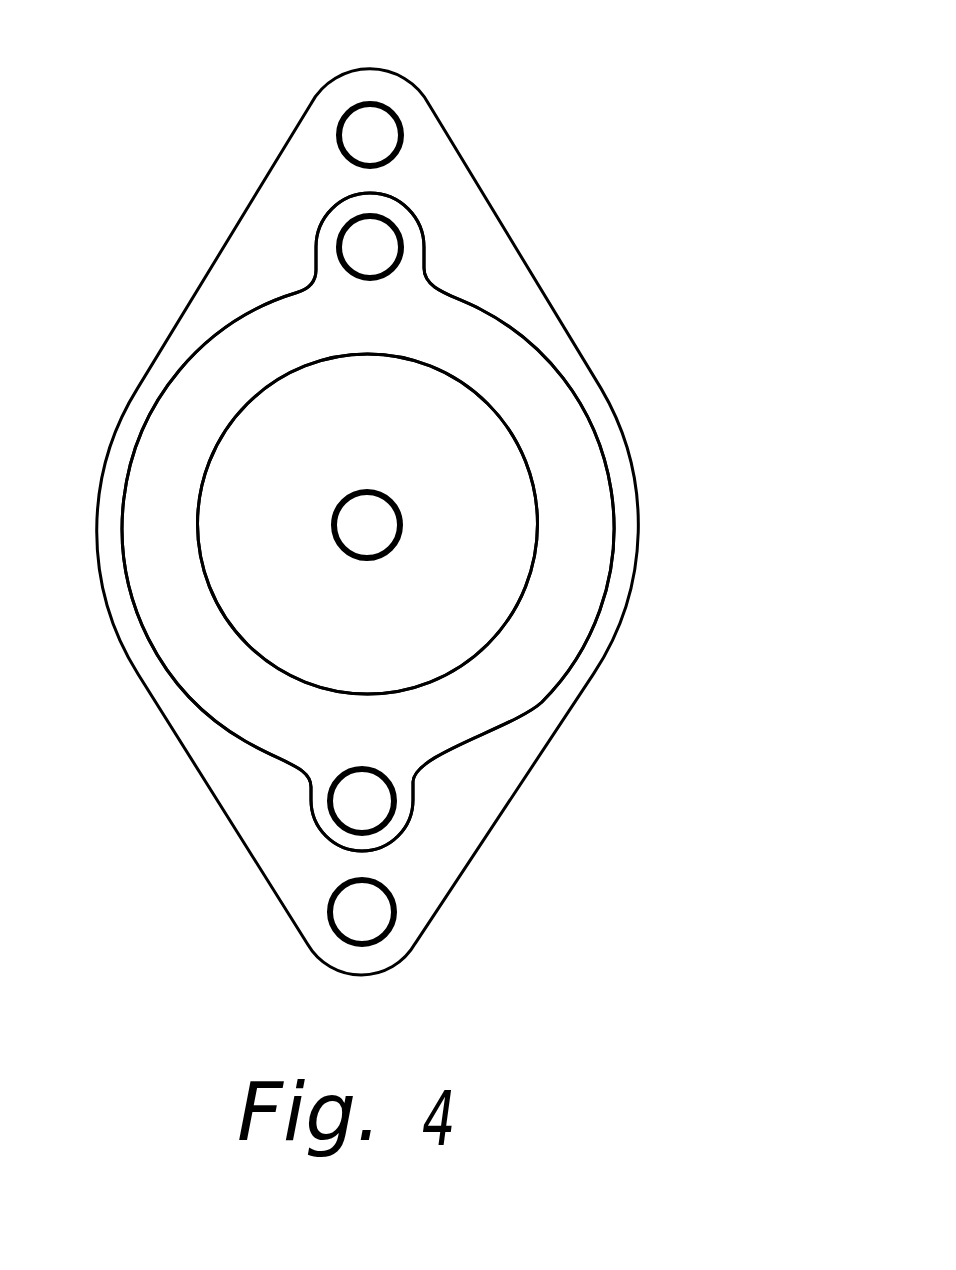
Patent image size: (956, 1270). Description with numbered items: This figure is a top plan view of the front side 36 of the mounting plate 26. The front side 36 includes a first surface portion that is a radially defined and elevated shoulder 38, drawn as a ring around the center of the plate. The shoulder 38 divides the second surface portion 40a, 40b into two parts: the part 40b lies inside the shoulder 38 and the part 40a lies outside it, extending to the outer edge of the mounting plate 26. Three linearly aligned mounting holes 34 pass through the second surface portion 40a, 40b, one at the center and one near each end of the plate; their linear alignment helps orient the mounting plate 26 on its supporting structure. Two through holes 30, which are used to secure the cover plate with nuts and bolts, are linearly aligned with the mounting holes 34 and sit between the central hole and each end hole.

The mounting plate 26 is at (557, 313).
The through holes 30 is at (387, 240).
The mounting holes 34 is at (388, 125).
The front side 36 is at (277, 210).
The shoulder 38 is at (587, 572).
The second surface portion 40a is at (543, 712).
The second surface portion 40b is at (483, 433).